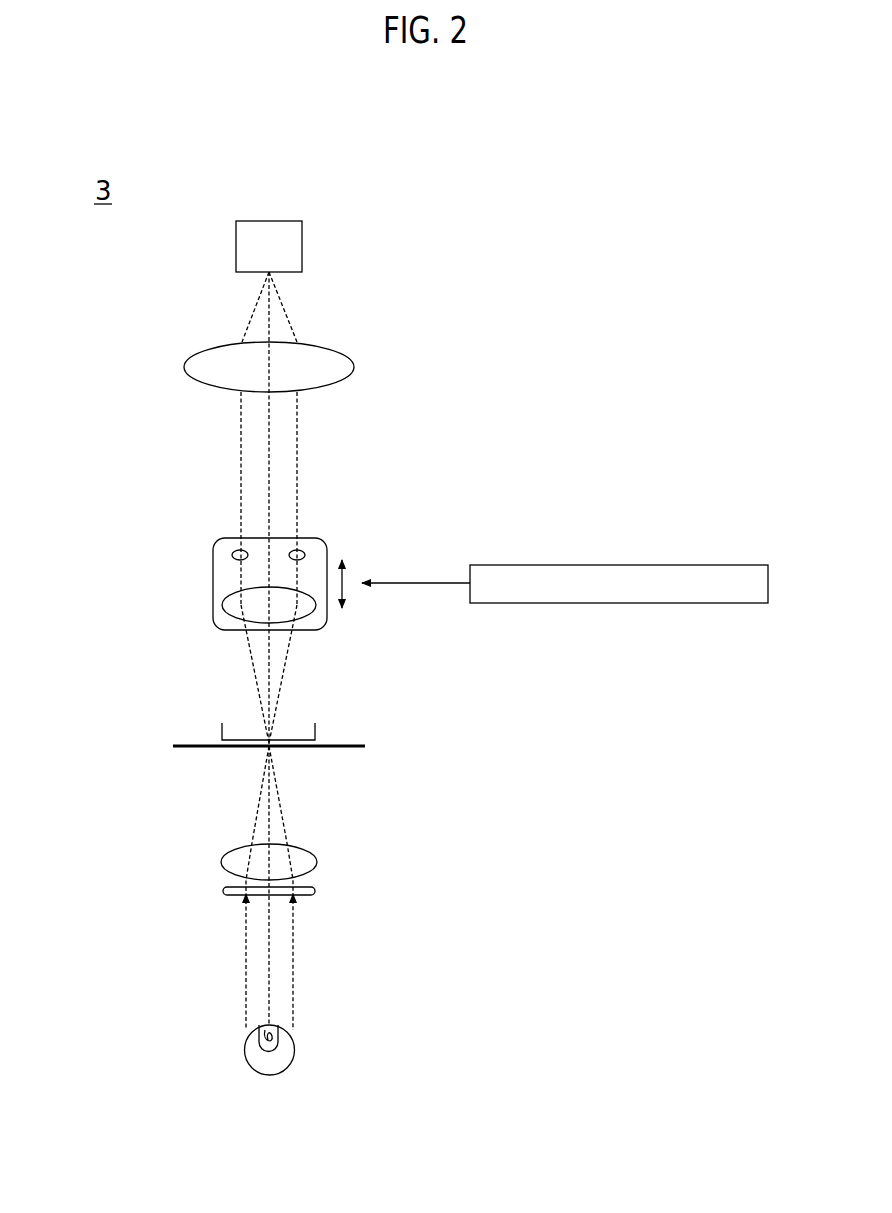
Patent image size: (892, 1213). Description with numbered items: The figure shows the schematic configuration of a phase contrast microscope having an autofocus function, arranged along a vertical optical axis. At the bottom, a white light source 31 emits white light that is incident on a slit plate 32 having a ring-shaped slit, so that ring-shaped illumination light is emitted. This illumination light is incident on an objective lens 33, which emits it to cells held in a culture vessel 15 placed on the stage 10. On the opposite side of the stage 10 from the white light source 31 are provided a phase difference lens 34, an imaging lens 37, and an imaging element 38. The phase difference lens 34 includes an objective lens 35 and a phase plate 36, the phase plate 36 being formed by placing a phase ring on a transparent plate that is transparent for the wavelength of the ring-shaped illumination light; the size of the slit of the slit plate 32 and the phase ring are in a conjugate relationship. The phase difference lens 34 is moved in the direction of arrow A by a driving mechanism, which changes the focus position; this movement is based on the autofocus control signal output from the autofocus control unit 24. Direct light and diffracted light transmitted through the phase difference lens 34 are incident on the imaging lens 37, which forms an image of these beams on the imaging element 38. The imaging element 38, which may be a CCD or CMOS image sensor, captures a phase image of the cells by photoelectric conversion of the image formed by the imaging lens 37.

The imaging element 38 is at (235, 243).
The imaging lens 37 is at (184, 368).
The phase plate 36 is at (214, 556).
The objective lens 35 is at (228, 592).
The phase difference lens 34 is at (212, 610).
The arrow A direction A is at (351, 594).
The autofocus control unit 24 is at (488, 603).
The culture vessel 15 is at (318, 727).
The stage 10 is at (340, 750).
The objective lens 33 is at (220, 864).
The slit plate 32 is at (318, 890).
The white light source 31 is at (244, 1060).